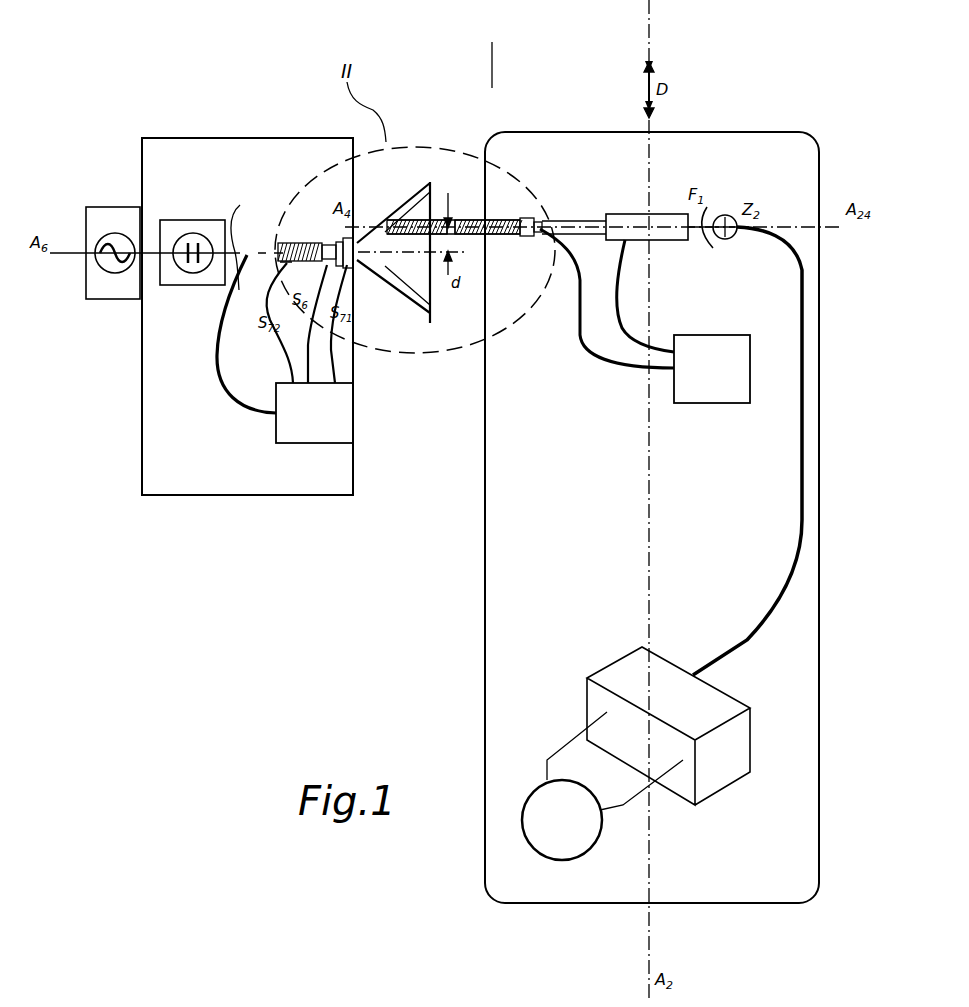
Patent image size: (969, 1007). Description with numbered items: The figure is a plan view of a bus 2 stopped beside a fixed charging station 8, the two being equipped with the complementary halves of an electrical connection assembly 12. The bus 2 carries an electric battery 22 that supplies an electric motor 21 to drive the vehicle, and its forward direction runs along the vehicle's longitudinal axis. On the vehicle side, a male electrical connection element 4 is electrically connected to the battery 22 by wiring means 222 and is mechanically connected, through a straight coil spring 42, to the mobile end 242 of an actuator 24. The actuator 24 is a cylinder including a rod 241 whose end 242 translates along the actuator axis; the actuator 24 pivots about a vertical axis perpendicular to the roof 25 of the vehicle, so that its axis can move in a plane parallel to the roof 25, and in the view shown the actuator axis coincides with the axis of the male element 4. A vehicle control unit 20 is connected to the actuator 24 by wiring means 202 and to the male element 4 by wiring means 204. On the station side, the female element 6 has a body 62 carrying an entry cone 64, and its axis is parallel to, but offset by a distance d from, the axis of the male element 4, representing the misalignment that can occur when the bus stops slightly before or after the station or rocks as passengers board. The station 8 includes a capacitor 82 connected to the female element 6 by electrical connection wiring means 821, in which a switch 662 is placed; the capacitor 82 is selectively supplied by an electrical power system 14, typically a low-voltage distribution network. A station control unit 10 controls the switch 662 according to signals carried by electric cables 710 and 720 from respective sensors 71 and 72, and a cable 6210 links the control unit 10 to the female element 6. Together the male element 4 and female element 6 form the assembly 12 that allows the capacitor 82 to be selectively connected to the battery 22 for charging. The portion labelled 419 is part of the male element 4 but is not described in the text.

The bus 2 is at (772, 122).
The male electrical connection element 4 is at (462, 213).
The female element 6 is at (410, 184).
The charging station 8 is at (188, 128).
The control unit 10 is at (314, 413).
The electrical connection assembly 12 is at (506, 65).
The electrical power system 14 is at (105, 215).
The control unit 20 is at (712, 369).
The electric motor 21 is at (602, 786).
The electric battery 22 is at (668, 726).
The actuator 24 is at (628, 214).
The roof 25 is at (497, 637).
The straight coil spring 42 is at (487, 219).
The body 62 is at (300, 240).
The entry cone 64 is at (408, 212).
The sensor 71 is at (345, 268).
The sensor 72 is at (281, 259).
The capacitor 82 is at (187, 226).
The wiring means 202 is at (612, 306).
The wiring means 204 is at (586, 366).
The wiring means 222 is at (800, 468).
The rod 241 is at (565, 220).
The mobile end 242 is at (536, 238).
The shaft section 419 is at (463, 238).
The switch 662 is at (240, 290).
The electric cable 710 is at (337, 360).
The electric cable 720 is at (290, 349).
The electrical connection wiring means 821 is at (282, 208).
The cable 6210 is at (297, 371).